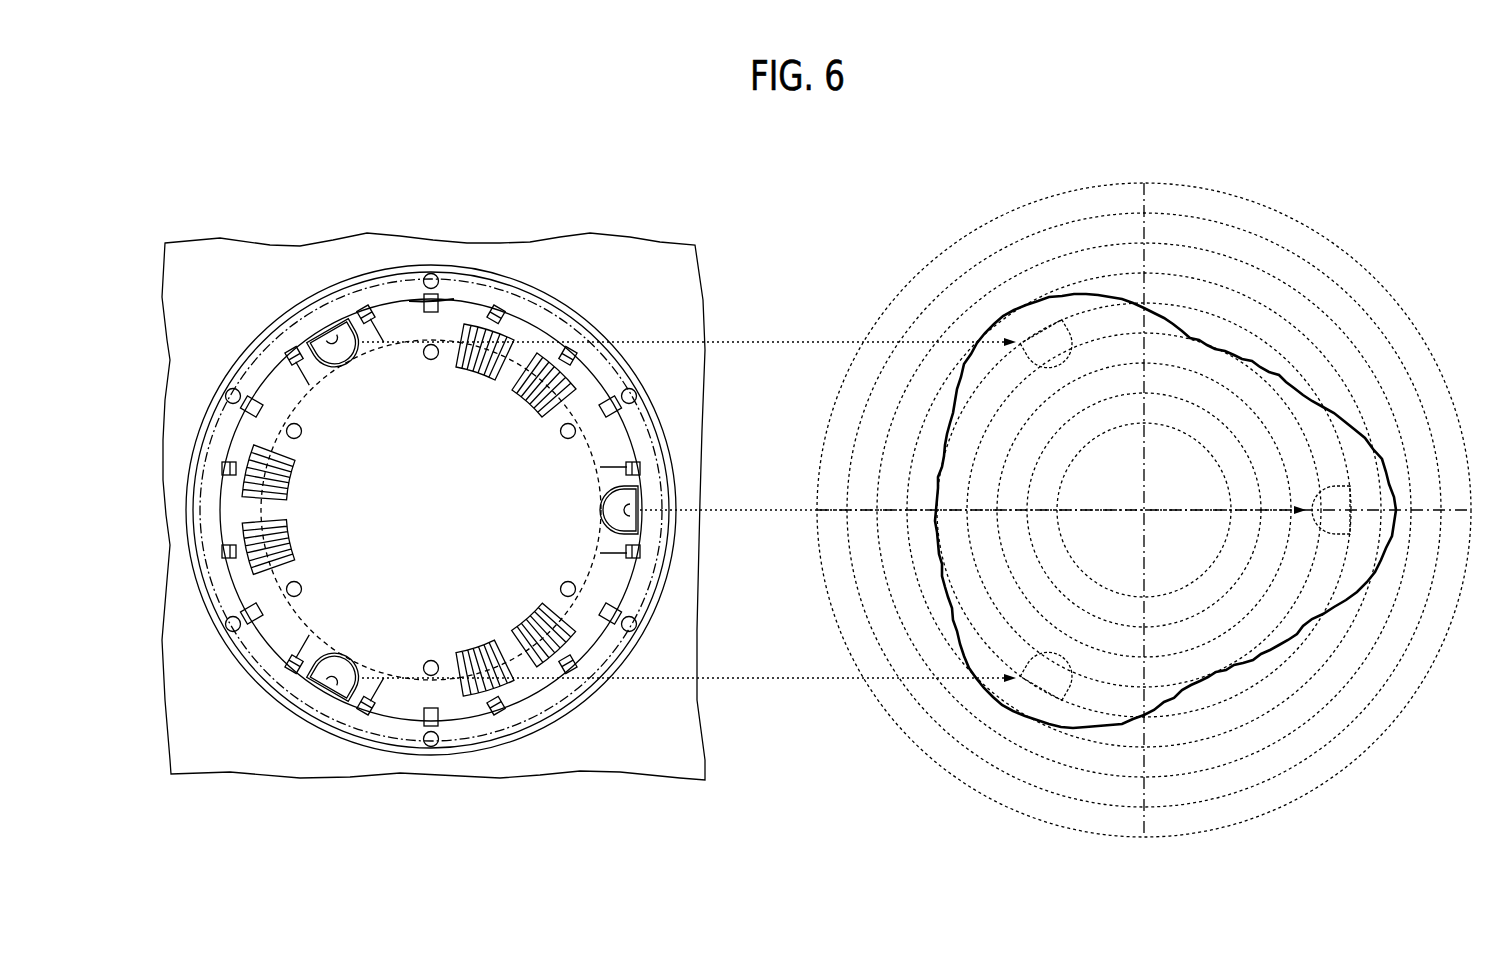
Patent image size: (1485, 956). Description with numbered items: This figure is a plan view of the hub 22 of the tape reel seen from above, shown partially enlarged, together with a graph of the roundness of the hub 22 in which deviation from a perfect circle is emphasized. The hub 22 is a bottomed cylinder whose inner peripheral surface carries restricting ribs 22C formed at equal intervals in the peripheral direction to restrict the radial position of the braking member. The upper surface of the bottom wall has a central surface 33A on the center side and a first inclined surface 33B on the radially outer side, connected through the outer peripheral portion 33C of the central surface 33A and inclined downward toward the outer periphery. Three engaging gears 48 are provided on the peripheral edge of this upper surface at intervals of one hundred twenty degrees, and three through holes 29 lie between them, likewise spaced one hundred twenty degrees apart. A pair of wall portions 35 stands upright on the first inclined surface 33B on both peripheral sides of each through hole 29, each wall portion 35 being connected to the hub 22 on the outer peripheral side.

The hub 22 is at (198, 421).
The restricting ribs 22C is at (292, 350).
The through holes 29 is at (332, 322).
The central surface 33A is at (568, 462).
The first inclined surface 33B is at (236, 586).
The outer peripheral portion 33C is at (456, 335).
The wall portions 35 is at (373, 330).
The engaging gears 48 is at (483, 340).